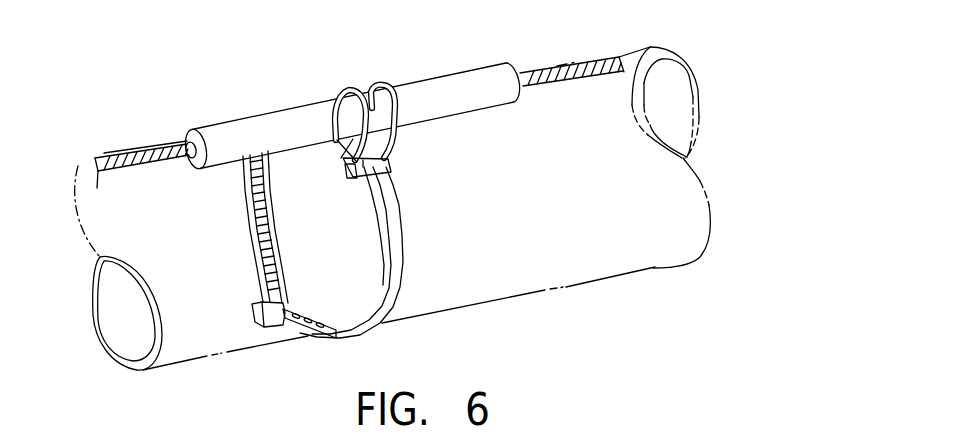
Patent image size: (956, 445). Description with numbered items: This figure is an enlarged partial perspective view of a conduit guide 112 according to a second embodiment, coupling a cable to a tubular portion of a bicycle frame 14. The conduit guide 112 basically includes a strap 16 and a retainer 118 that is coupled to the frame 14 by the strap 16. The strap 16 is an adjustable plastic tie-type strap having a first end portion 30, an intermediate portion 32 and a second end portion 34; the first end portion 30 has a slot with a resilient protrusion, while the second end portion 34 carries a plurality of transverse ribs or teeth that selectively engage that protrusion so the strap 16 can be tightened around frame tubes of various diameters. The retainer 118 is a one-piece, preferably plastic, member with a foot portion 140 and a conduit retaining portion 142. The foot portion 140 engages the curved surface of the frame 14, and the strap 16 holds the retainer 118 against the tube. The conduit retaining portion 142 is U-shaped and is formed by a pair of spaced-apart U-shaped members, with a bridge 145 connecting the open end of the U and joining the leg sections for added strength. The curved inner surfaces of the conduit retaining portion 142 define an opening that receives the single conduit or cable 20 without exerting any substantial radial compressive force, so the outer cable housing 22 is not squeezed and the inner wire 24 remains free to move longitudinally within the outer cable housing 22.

The bicycle frame 14 is at (572, 300).
The strap 16 is at (356, 244).
The cable 20 is at (479, 63).
The outer cable housing 22 is at (521, 71).
The inner wire 24 is at (578, 57).
The first end portion 30 is at (299, 302).
The intermediate portion 32 is at (374, 219).
The second end portion 34 is at (317, 313).
The conduit guide 112 is at (371, 103).
The retainer 118 is at (330, 88).
The foot portion 140 is at (403, 166).
The conduit retaining portion 142 is at (408, 115).
The bridge 145 is at (357, 164).